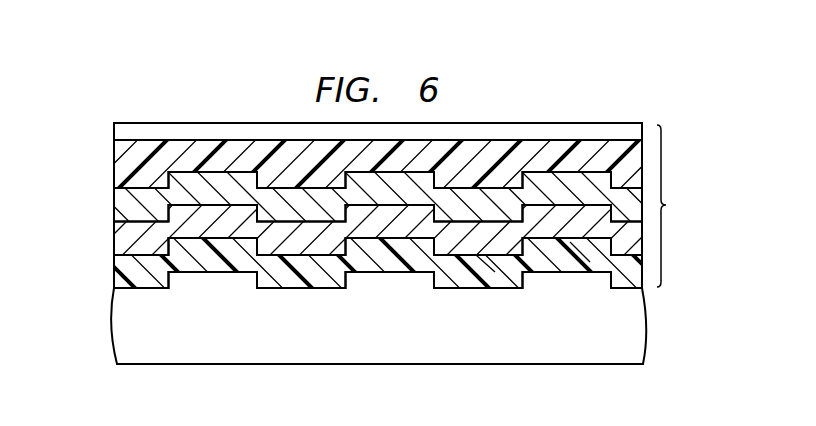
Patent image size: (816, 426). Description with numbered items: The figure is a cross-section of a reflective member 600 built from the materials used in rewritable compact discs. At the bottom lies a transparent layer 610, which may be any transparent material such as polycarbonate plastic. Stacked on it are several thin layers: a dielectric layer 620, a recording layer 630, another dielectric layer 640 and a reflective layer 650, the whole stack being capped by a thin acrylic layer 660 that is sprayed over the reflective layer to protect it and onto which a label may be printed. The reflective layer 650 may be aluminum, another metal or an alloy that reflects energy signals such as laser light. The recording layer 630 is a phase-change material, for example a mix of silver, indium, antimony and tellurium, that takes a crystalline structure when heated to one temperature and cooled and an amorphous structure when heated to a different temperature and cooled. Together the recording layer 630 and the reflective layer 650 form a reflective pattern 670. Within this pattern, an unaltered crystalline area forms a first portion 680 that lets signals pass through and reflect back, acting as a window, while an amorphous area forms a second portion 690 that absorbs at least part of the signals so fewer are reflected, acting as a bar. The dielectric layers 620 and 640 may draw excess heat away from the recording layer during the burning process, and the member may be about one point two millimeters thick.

The reflective member 600 is at (158, 82).
The transparent layer 610 is at (207, 365).
The dielectric layer 620 is at (290, 282).
The recording layer 630 is at (113, 238).
The dielectric layer 640 is at (115, 207).
The reflective layer 650 is at (115, 152).
The acrylic layer 660 is at (563, 133).
The reflective pattern 670 is at (380, 206).
The first portion 680 is at (485, 257).
The second portion 690 is at (575, 240).